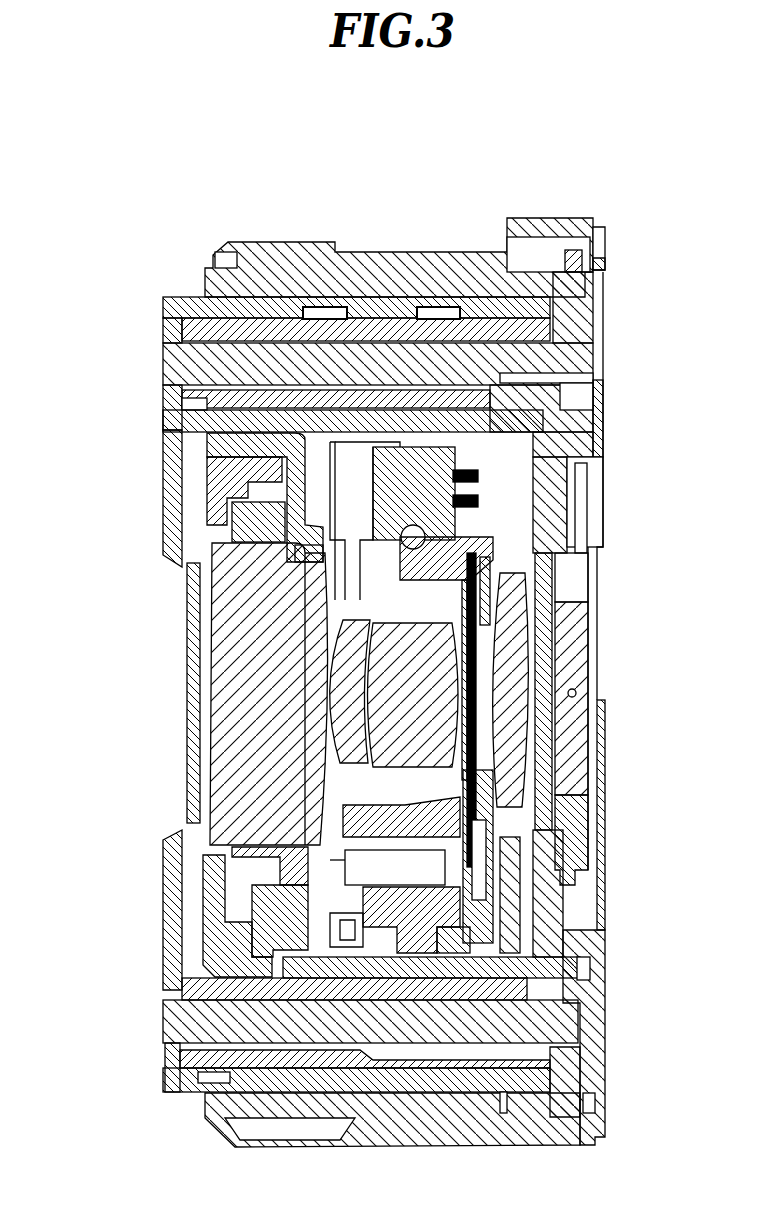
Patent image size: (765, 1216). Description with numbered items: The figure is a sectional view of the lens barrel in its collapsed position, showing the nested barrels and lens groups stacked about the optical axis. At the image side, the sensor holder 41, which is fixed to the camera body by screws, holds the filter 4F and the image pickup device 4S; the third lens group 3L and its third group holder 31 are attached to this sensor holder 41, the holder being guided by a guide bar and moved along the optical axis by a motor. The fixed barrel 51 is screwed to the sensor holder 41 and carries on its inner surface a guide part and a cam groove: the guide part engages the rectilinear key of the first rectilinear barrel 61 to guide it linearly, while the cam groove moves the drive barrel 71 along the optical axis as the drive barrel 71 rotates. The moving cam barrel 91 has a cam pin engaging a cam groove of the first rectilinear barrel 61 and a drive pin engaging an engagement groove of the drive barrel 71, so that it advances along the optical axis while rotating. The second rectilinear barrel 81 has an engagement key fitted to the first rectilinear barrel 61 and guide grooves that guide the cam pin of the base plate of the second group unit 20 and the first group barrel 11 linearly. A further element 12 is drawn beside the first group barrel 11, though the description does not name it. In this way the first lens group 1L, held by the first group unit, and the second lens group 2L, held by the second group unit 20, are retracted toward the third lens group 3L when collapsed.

The drive barrel 71 is at (178, 296).
The fixed barrel 51 is at (313, 243).
The first rectilinear barrel 61 is at (390, 328).
The moving cam barrel 91 is at (163, 350).
The first group barrel 11 is at (192, 398).
The second rectilinear barrel 81 is at (172, 418).
The first lens group 1L is at (232, 636).
The second lens group 2L is at (338, 670).
The third lens group 3L is at (505, 625).
The lens barrel 12 is at (190, 730).
The image pickup device 4S is at (590, 650).
The filter 4F is at (542, 735).
The third group holder 31 is at (540, 837).
The sensor holder 41 is at (600, 948).
The second group unit 20 is at (400, 975).